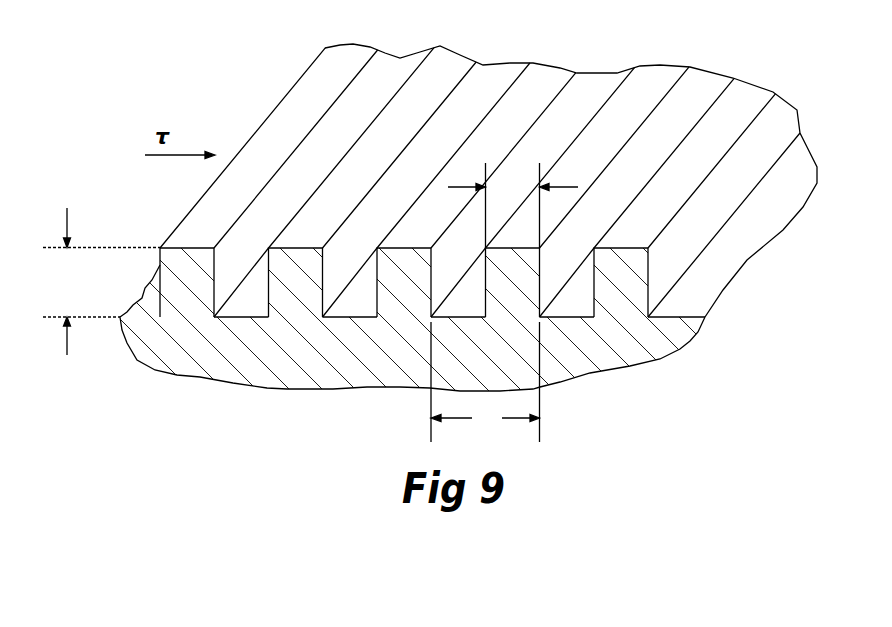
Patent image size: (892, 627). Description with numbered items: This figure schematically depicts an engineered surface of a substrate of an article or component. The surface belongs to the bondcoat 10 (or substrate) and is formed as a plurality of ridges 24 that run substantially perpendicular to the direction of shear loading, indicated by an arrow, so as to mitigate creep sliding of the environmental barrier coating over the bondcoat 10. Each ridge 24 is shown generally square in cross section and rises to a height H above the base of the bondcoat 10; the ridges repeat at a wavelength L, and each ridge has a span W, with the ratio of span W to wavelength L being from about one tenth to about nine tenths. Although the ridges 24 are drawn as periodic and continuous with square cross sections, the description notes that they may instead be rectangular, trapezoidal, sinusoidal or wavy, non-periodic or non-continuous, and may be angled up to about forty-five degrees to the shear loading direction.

The bondcoat 10 is at (393, 360).
The ridge 24 is at (173, 255).
The height H is at (101, 281).
The span W is at (513, 205).
The wavelength L is at (485, 382).